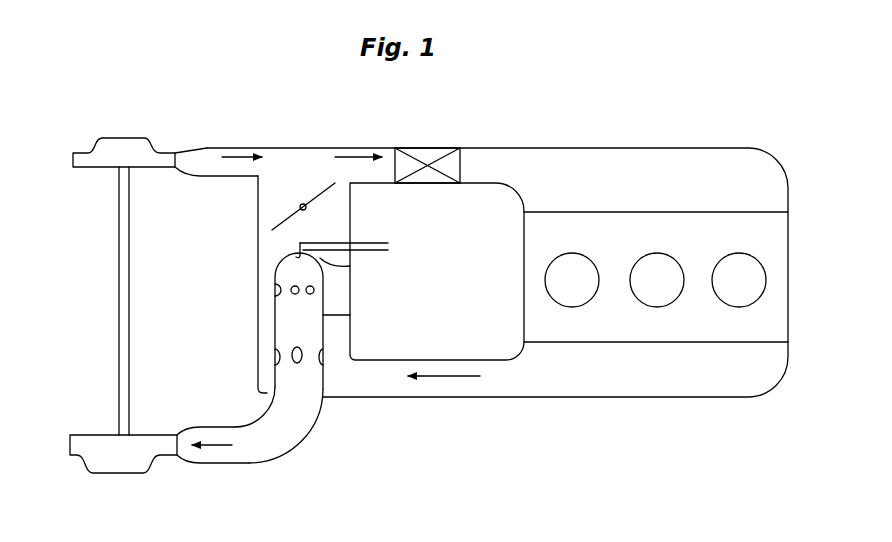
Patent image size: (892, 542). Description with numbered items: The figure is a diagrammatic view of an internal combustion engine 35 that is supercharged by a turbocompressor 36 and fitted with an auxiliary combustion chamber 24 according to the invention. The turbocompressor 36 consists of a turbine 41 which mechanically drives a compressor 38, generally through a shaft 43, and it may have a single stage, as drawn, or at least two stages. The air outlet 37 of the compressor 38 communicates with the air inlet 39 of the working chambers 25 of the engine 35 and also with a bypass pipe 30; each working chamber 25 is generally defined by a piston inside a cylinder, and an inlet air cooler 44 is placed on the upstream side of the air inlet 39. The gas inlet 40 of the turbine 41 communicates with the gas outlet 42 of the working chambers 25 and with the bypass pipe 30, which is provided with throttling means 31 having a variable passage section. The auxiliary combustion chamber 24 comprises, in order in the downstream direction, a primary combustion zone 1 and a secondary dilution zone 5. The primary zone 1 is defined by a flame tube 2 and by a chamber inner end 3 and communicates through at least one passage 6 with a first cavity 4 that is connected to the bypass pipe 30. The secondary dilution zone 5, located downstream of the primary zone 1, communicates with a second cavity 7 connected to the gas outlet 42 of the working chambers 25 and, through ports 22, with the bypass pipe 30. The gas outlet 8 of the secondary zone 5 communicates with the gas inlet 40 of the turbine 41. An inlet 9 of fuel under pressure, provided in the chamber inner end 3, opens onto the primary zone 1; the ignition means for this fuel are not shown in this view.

The primary combustion zone 1 is at (304, 272).
The flame tube 2 is at (350, 315).
The chamber inner end 3 is at (350, 266).
The first cavity 4 is at (337, 232).
The secondary dilution zone 5 is at (308, 394).
The passage 6 is at (325, 289).
The second cavity 7 is at (338, 377).
The gas outlet 8 is at (288, 428).
The inlet of fuel under pressure 9 is at (304, 242).
The ports 22 is at (302, 352).
The auxiliary combustion chamber 24 is at (274, 330).
The working chambers 25 is at (572, 297).
The bypass pipe 30 is at (258, 226).
The throttling means 31 is at (307, 190).
The internal combustion engine 35 is at (790, 238).
The turbocompressor 36 is at (118, 292).
The air outlet 37 is at (220, 150).
The compressor 38 is at (130, 140).
The air inlet 39 is at (695, 180).
The gas inlet 40 is at (247, 457).
The turbine 41 is at (125, 468).
The gas outlet 42 is at (752, 390).
The shaft 43 is at (122, 232).
The inlet air cooler 44 is at (438, 154).